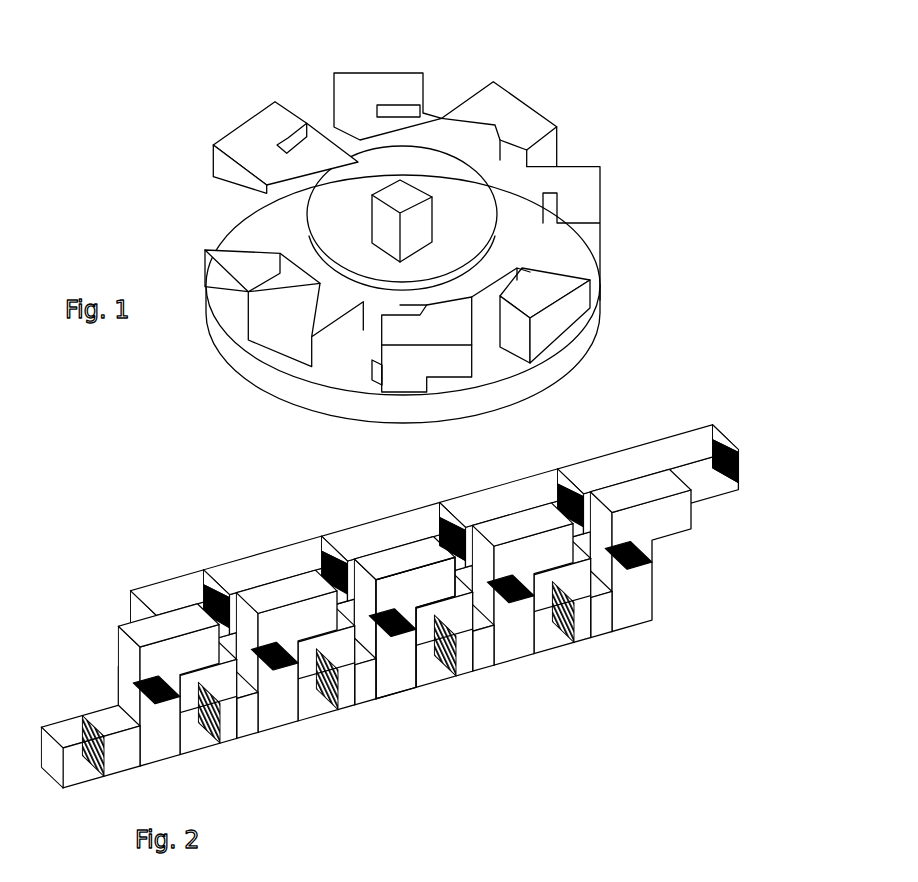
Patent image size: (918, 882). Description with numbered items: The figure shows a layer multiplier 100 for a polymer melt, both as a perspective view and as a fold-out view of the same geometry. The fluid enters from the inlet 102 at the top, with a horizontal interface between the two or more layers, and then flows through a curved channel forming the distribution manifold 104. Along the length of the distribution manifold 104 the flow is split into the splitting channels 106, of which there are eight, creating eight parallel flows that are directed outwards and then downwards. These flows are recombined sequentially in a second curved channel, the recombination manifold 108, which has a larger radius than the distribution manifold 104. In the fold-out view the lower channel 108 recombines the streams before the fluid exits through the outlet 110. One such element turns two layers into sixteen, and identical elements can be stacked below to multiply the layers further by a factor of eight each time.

In FIG. 1, the layer multiplier 100 is at (206, 115).
In FIG. 1, the inlet 102 is at (400, 182).
In FIG. 2, the inlet 102 is at (741, 455).
In FIG. 1, the distribution manifold 104 is at (494, 290).
In FIG. 2, the distribution manifold 104 is at (455, 504).
In FIG. 1, the splitting channels 106 is at (398, 95).
In FIG. 2, the splitting channels 106 is at (203, 662).
In FIG. 1, the recombination manifold 108 is at (378, 372).
In FIG. 2, the recombination manifold 108 is at (416, 672).
In FIG. 2, the outlet 110 is at (57, 765).